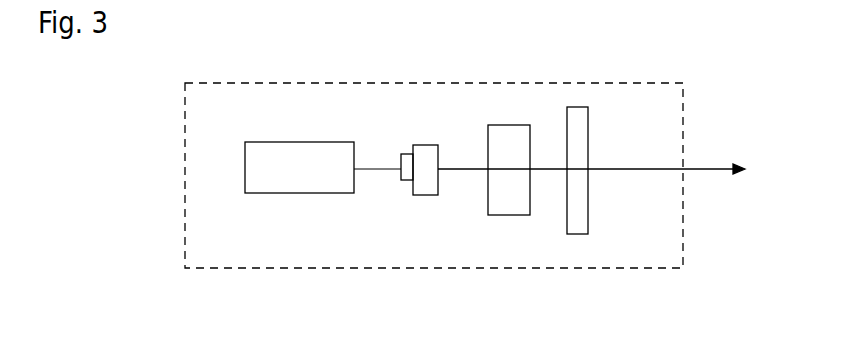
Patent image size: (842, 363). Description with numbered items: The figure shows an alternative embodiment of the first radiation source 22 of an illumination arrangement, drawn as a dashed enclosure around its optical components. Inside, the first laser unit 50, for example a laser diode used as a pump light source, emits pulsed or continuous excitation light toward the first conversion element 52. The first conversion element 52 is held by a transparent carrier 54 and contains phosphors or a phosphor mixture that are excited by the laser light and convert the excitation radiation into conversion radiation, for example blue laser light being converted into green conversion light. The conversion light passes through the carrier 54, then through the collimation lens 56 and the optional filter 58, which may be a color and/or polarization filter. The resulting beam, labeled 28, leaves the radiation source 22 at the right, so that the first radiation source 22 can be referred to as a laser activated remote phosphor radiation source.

The first radiation source 22 is at (185, 177).
The output light beam 28 is at (667, 175).
The first laser unit 50 is at (300, 193).
The first conversion element 52 is at (408, 180).
The transparent carrier 54 is at (430, 145).
The collimation lens 56 is at (510, 215).
The filter 58 is at (578, 234).